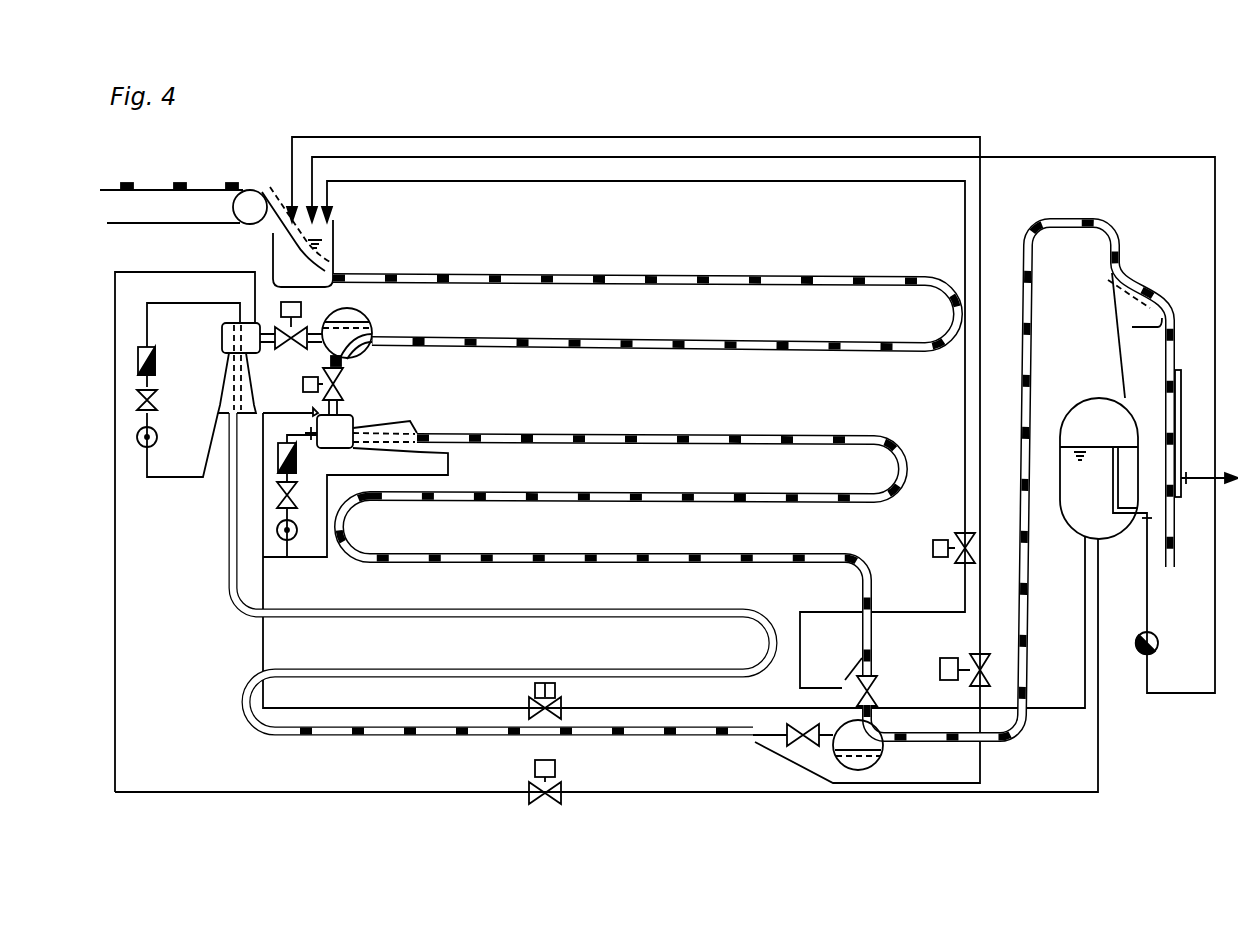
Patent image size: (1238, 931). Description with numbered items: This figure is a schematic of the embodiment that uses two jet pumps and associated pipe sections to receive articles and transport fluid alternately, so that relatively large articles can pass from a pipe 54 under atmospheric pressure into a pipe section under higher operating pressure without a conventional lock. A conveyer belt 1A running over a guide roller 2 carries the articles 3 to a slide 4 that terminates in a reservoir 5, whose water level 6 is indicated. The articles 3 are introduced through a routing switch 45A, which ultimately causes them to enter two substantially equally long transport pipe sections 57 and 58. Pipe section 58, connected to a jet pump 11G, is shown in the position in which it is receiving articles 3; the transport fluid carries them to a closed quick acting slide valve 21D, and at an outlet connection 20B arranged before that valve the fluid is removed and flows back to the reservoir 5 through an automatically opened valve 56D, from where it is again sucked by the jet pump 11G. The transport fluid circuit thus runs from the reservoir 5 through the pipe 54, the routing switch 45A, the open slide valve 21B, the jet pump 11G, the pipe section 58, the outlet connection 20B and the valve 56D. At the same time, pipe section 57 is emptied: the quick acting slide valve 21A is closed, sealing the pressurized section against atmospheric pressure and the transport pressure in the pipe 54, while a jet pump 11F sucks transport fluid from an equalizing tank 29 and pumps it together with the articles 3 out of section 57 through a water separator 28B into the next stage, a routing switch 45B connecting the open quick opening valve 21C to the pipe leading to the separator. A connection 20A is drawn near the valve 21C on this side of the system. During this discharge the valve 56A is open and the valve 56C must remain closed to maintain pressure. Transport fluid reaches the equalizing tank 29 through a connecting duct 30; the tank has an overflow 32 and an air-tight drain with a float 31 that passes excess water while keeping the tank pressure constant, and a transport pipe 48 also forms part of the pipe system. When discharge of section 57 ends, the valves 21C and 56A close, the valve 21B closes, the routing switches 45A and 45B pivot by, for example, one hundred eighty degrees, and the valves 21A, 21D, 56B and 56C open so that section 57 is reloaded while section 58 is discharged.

The conveyer belt 1A is at (167, 228).
The articles 3 is at (181, 186).
The guide roller 2 is at (246, 217).
The slide 4 is at (272, 240).
The reservoir 5 is at (335, 250).
The water level 6 is at (336, 224).
The pipe 54 is at (512, 275).
The routing switch 45A is at (368, 315).
The jet pump 11F is at (222, 343).
The quick acting slide valve 21A is at (290, 358).
The slide valve 21B is at (345, 380).
The jet pump 11G is at (363, 426).
The transport pipe section 58 is at (518, 431).
The transport pipe 48 is at (718, 563).
The transport pipe section 57 is at (228, 532).
The automatically opened valve 56D is at (933, 548).
The valve 56C is at (943, 658).
The outlet connection 20B is at (858, 665).
The quick acting slide valve 21D is at (875, 692).
The water separator 28B is at (1132, 318).
The routing switch 45B is at (882, 757).
The quick opening valve 21C is at (812, 728).
The pipe section 20A is at (768, 744).
The automatically controlled valve 56B is at (535, 696).
The valve 56A is at (532, 800).
The connecting duct 30 is at (1123, 360).
The equalizing tank 29 is at (1078, 410).
The overflow 32 is at (1110, 500).
The float 31 is at (1143, 632).